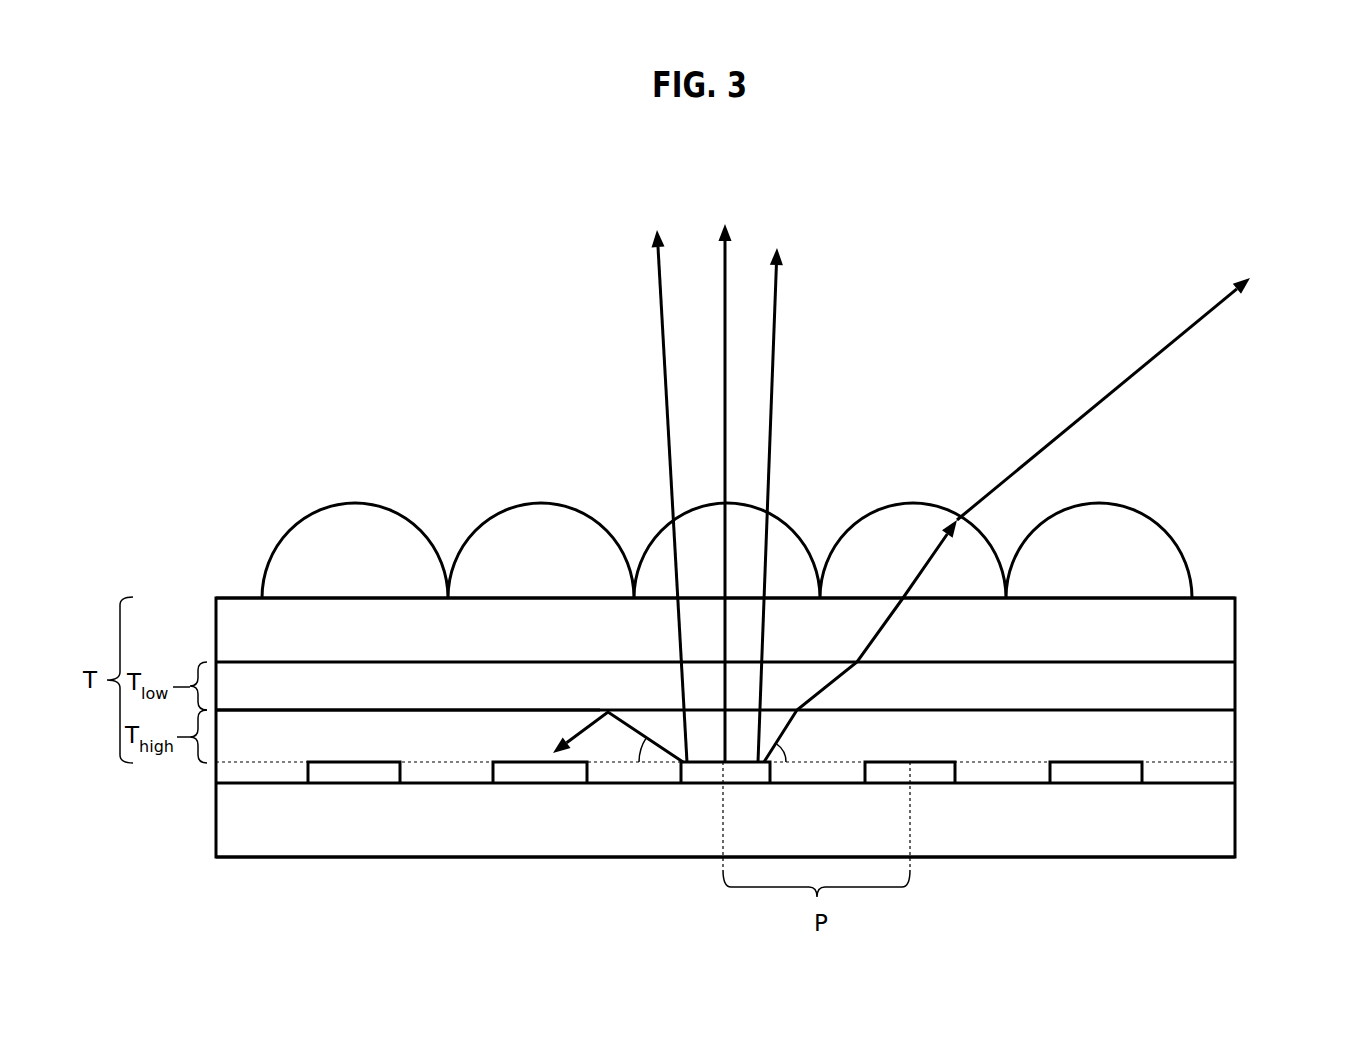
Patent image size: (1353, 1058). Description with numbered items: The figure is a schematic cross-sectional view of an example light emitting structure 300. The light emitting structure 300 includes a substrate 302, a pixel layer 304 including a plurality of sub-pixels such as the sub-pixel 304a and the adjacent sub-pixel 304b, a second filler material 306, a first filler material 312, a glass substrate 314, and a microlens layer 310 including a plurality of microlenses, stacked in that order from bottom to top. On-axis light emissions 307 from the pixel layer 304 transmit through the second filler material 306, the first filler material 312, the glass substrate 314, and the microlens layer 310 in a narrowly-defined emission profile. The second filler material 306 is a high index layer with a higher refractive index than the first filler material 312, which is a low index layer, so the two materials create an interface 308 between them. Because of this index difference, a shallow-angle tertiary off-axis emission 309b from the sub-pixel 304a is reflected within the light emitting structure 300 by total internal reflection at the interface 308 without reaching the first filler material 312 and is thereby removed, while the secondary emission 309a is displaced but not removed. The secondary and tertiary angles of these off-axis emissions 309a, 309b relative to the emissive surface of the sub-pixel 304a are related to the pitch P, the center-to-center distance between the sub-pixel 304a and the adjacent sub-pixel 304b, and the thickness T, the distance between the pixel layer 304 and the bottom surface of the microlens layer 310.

The light emitting structure 300 is at (282, 289).
The substrate 302 is at (1207, 831).
The pixel layer 304 is at (447, 773).
The sub-pixel 304a is at (713, 773).
The adjacent sub-pixel 304b is at (937, 773).
The second filler material 306 is at (1205, 752).
The on-axis light emissions 307 is at (643, 227).
The interface 308 is at (270, 711).
The secondary emission 309a is at (1072, 415).
The tertiary emission 309b is at (598, 716).
The microlens layer 310 is at (1140, 536).
The first filler material 312 is at (1205, 693).
The glass substrate 314 is at (1205, 630).